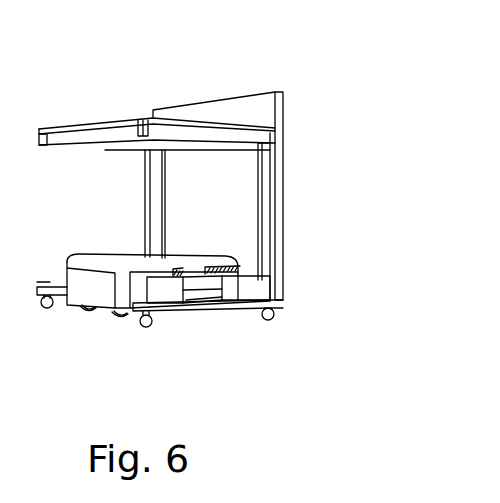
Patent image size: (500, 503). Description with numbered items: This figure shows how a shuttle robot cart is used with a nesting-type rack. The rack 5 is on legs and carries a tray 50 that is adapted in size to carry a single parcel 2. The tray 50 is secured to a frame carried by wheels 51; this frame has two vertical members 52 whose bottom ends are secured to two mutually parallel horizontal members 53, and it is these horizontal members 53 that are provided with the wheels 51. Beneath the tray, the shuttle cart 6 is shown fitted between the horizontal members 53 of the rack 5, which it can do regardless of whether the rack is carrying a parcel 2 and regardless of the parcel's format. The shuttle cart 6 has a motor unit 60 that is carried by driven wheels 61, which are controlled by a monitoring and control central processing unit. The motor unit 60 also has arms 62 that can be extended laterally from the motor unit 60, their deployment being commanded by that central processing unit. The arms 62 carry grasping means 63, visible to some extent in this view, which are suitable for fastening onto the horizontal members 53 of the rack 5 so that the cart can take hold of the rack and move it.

The rack 5 is at (210, 78).
The tray 50 is at (110, 122).
The parcel 2 is at (9, 132).
The vertical member 52 is at (145, 165).
The shuttle cart 6 is at (63, 242).
The motor unit 60 is at (113, 258).
The arm 62 is at (240, 274).
The grasping means 63 is at (228, 304).
The horizontal member 53 is at (47, 285).
The wheel 51 is at (46, 309).
The driven wheel 61 is at (81, 313).